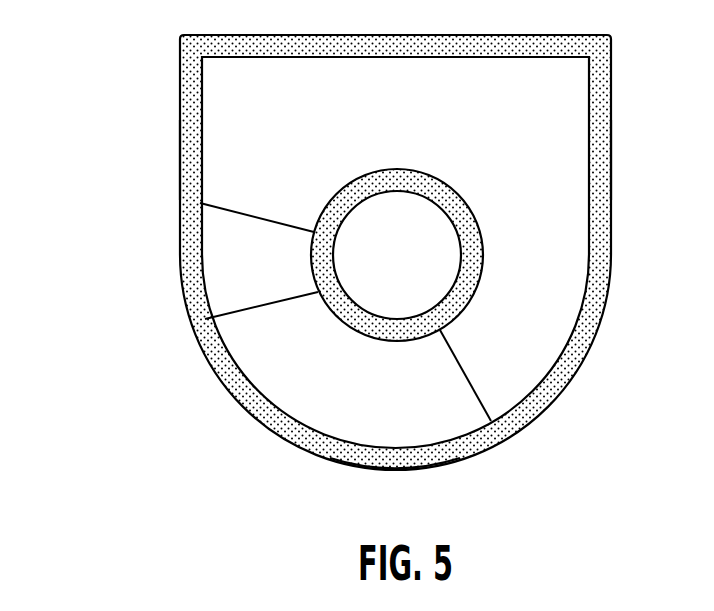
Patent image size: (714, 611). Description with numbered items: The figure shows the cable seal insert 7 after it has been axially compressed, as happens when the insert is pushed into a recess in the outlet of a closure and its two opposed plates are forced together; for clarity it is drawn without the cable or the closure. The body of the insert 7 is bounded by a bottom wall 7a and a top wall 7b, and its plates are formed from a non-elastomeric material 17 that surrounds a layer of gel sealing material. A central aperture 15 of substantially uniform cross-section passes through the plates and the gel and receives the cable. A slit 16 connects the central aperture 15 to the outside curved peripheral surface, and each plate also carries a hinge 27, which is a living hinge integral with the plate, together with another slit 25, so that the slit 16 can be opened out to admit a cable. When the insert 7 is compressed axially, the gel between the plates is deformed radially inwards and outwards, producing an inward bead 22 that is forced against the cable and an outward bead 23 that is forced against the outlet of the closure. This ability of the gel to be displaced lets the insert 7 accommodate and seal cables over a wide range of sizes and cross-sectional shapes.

The cable seal insert 7 is at (106, 80).
The bottom wall of housing 7a is at (382, 470).
The top wall of housing 7b is at (341, 34).
The hinge 27 is at (448, 36).
The bead 23 is at (192, 157).
The slit 25 is at (231, 211).
The bead 22 is at (225, 316).
The slit 16 is at (478, 397).
The aperture 15 is at (409, 266).
The non-elastomeric material 17 is at (318, 134).